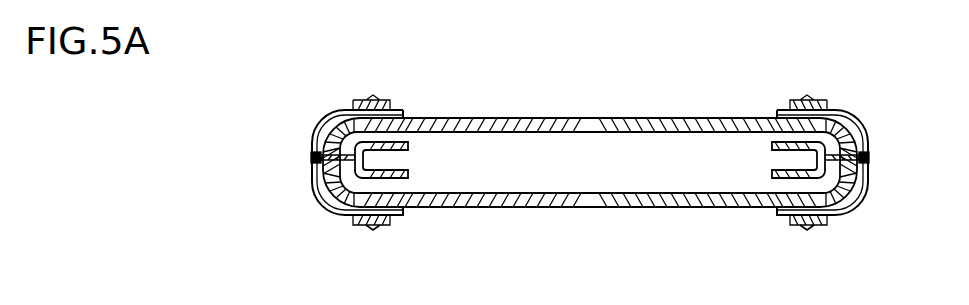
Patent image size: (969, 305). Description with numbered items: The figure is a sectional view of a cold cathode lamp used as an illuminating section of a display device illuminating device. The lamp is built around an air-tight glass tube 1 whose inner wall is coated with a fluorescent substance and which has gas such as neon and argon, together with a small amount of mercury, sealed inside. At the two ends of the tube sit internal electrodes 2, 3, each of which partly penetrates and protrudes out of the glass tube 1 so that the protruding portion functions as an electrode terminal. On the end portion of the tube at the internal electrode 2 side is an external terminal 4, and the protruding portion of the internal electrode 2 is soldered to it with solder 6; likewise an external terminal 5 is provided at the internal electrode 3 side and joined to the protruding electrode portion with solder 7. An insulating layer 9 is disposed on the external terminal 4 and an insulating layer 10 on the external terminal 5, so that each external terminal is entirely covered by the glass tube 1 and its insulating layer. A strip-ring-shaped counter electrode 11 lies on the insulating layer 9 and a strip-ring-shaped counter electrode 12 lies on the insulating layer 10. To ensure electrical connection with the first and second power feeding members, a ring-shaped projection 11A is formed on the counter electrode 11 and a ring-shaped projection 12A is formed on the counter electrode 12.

The glass tube 1 is at (590, 118).
The internal electrode 2 is at (405, 143).
The internal electrode 3 is at (776, 143).
The external terminal 4 is at (339, 114).
The external terminal 5 is at (840, 113).
The solder 6 is at (312, 157).
The solder 7 is at (868, 157).
The insulating layer 9 is at (324, 116).
The insulating layer 10 is at (862, 118).
The counter electrode 11 is at (362, 226).
The ring-shaped projection 11A is at (380, 226).
The counter electrode 12 is at (792, 228).
The ring-shaped projection 12A is at (812, 228).